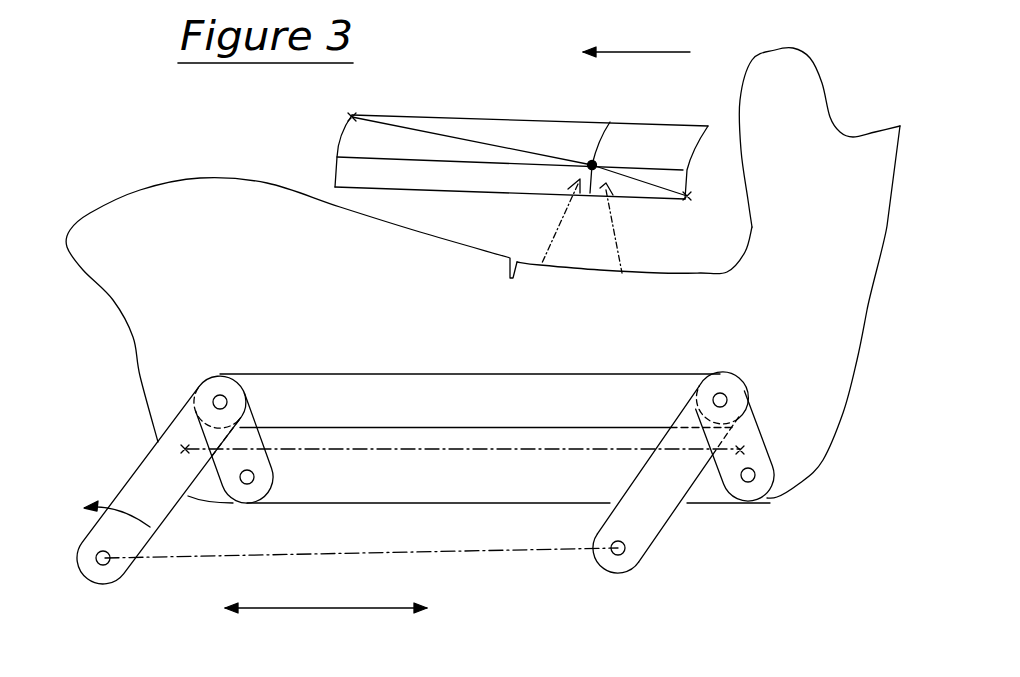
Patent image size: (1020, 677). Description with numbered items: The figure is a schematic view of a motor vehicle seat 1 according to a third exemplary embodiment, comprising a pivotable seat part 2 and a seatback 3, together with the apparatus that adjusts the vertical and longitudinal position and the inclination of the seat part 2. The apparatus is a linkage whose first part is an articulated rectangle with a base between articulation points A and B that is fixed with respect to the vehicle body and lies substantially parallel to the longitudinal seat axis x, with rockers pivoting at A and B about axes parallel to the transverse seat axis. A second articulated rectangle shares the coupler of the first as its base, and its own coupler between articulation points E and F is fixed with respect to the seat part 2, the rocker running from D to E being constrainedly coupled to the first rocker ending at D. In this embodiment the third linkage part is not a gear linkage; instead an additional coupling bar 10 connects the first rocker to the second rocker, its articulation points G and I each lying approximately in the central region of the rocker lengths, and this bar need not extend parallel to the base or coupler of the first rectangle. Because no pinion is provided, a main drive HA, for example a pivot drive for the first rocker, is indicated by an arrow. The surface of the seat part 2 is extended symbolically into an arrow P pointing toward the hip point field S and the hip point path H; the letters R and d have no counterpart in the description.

The motor vehicle seat 1 is at (100, 98).
The pivotable seat part 2 is at (102, 227).
The seatback 3 is at (812, 103).
The coupling bar 10 is at (540, 450).
The hip point path H is at (433, 131).
The hip point field S is at (663, 135).
The direction of travel R is at (640, 51).
The arrow P is at (605, 195).
The articulation point D is at (224, 398).
The pivot point d is at (722, 396).
The articulation point E is at (245, 482).
The articulation point F is at (745, 483).
The articulation point A is at (101, 564).
The articulation point B is at (625, 558).
The articulation point G is at (183, 449).
The articulation point I is at (743, 452).
The main drive HA is at (108, 502).
The longitudinal seat axis x is at (327, 620).